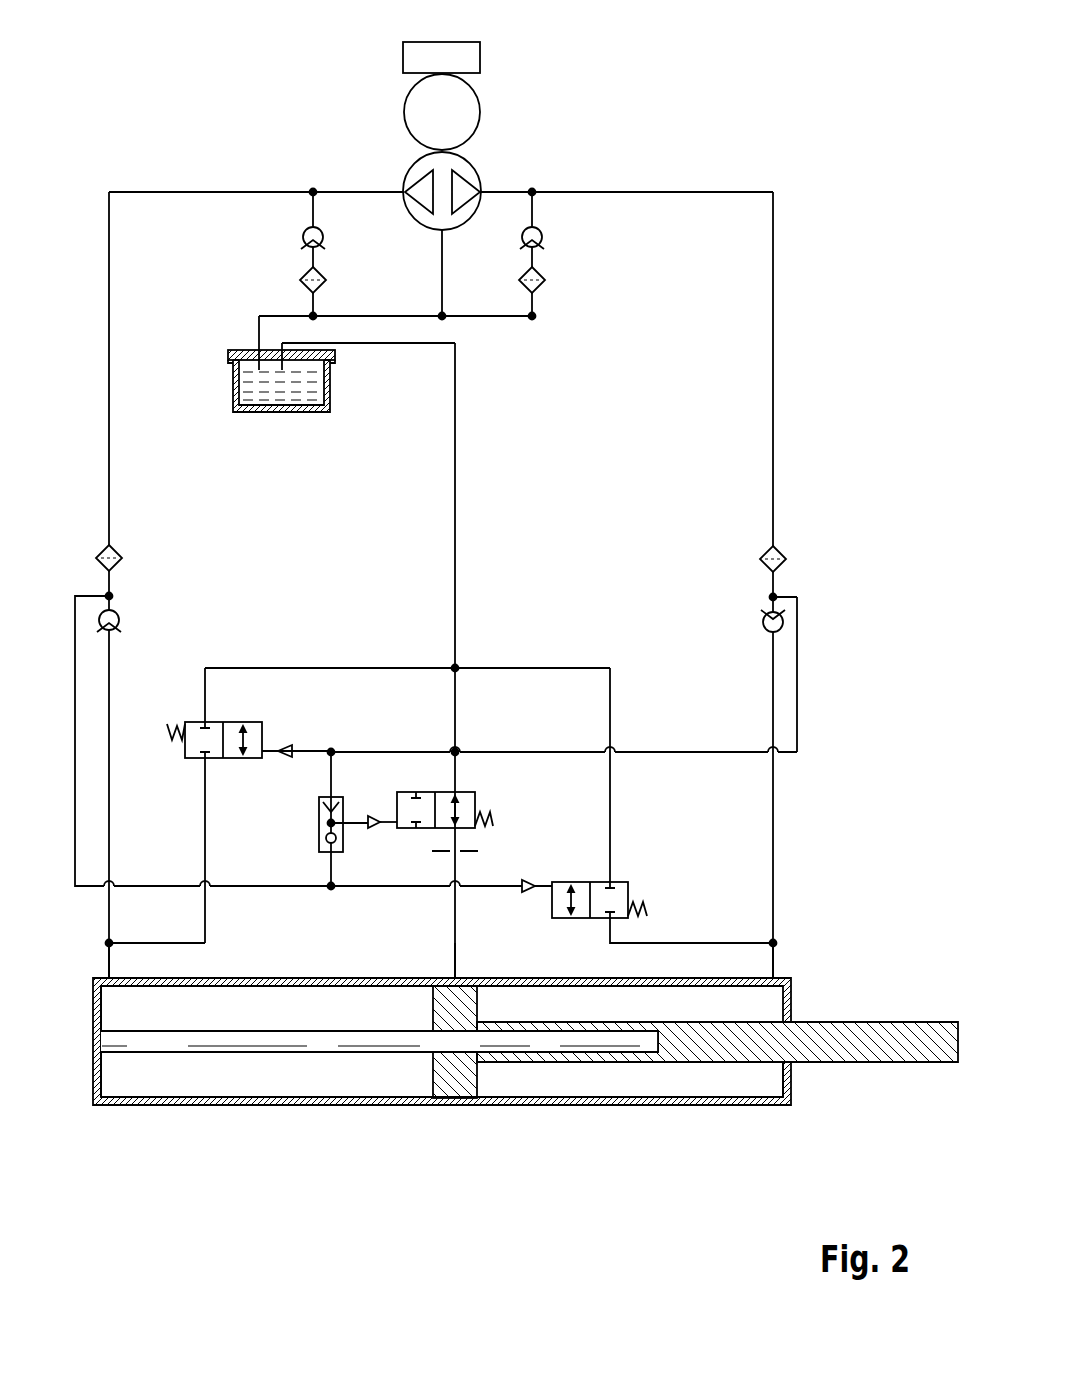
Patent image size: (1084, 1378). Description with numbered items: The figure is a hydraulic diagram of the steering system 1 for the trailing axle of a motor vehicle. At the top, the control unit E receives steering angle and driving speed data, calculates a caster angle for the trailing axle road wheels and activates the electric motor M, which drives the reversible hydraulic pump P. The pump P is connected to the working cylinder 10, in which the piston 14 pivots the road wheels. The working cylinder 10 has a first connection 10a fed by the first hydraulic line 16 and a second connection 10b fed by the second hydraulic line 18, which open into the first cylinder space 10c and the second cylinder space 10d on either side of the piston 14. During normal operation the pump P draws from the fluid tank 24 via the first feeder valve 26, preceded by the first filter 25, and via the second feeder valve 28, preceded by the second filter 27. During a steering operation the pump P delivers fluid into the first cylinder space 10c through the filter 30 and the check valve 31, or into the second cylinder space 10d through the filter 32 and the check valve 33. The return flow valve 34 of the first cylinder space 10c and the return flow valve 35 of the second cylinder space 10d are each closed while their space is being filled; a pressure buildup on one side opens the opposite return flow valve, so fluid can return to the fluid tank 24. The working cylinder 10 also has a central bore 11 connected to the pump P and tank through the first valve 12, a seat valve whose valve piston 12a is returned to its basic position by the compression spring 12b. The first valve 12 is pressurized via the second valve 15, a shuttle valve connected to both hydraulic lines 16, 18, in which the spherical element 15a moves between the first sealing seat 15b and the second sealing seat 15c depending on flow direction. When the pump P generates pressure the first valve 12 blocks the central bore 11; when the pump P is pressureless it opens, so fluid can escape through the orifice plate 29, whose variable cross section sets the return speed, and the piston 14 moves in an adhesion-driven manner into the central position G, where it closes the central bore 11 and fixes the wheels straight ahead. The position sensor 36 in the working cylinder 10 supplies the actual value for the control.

The steering system 1 is at (127, 72).
The control unit E is at (480, 55).
The electric motor M is at (480, 112).
The hydraulic pump P is at (477, 167).
The working cylinder 10 is at (138, 1114).
The first connection 10a is at (108, 978).
The second connection 10b is at (773, 975).
The first cylinder space 10c is at (195, 1083).
The second cylinder space 10d is at (765, 1092).
The central bore 11 is at (455, 977).
The first valve 12 is at (478, 797).
The valve piston 12a is at (433, 802).
The compression spring 12b is at (493, 825).
The piston 14 is at (477, 1086).
The second valve 15 is at (316, 823).
The element 15a is at (321, 840).
The first sealing seat 15b is at (317, 805).
The second sealing seat 15c is at (320, 851).
The first hydraulic line 16 is at (109, 480).
The second hydraulic line 18 is at (775, 378).
The fluid tank 24 is at (307, 412).
The first filter 25 is at (303, 284).
The first feeder valve 26 is at (303, 237).
The second filter 27 is at (545, 280).
The second feeder valve 28 is at (542, 237).
The orifice plate 29 is at (440, 852).
The filter 30 is at (97, 556).
The check valve 31 is at (118, 614).
The filter 32 is at (783, 556).
The check valve 33 is at (765, 612).
The return flow valve 34 is at (262, 722).
The return flow valve 35 is at (628, 882).
The position sensor 36 is at (318, 1046).
The central position G is at (462, 1104).